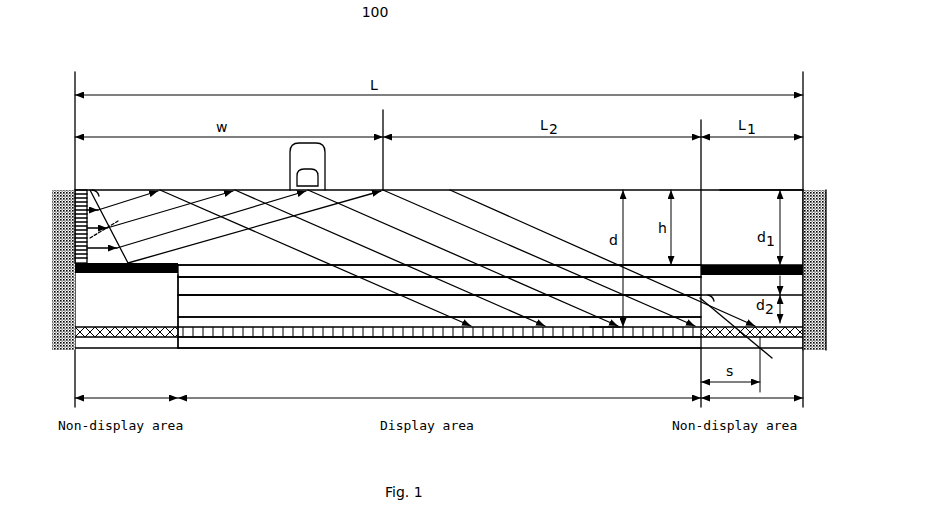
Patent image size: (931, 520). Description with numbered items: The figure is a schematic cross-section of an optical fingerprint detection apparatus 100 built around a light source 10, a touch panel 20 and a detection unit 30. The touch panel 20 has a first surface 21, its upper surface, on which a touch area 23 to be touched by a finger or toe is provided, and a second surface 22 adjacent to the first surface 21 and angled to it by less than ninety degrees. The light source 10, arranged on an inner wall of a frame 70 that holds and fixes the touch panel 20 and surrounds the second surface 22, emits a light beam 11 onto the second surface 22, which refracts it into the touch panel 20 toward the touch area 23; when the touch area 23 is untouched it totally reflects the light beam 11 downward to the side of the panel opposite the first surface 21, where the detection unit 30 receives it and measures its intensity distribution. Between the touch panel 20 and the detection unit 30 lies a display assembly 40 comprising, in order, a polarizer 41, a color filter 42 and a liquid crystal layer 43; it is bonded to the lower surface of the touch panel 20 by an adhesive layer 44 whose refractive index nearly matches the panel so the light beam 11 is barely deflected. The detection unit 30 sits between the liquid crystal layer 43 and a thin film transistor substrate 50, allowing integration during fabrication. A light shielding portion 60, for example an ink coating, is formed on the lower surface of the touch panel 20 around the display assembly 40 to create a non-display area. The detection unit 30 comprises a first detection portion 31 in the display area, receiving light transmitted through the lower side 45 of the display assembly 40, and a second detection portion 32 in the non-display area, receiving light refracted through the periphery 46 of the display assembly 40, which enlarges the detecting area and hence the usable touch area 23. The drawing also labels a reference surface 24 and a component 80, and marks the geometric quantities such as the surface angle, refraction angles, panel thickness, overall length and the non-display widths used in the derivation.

The optical fingerprint detection apparatus 100 is at (388, 20).
The light source 10 is at (75, 190).
The light beam 11 is at (173, 208).
The touch panel 20 is at (790, 218).
The first surface 21 is at (790, 190).
The second surface 22 is at (112, 274).
The touch area 23 is at (202, 188).
The upper surface of light guide 24 is at (687, 265).
The detection unit 30 is at (439, 360).
The first detection portion 31 is at (678, 333).
The second detection portion 32 is at (723, 335).
The display assembly 40 is at (439, 331).
The polarizer 41 is at (257, 287).
The color filter 42 is at (248, 307).
The liquid crystal layer 43 is at (243, 322).
The adhesive layer 44 is at (257, 270).
The side of the display assembly 45 is at (590, 330).
The periphery of the display assembly 46 is at (745, 334).
The thin film transistor substrate 50 is at (425, 343).
The light shielding portion 60 is at (826, 261).
The frame 70 is at (826, 231).
The camera module 80 is at (289, 161).